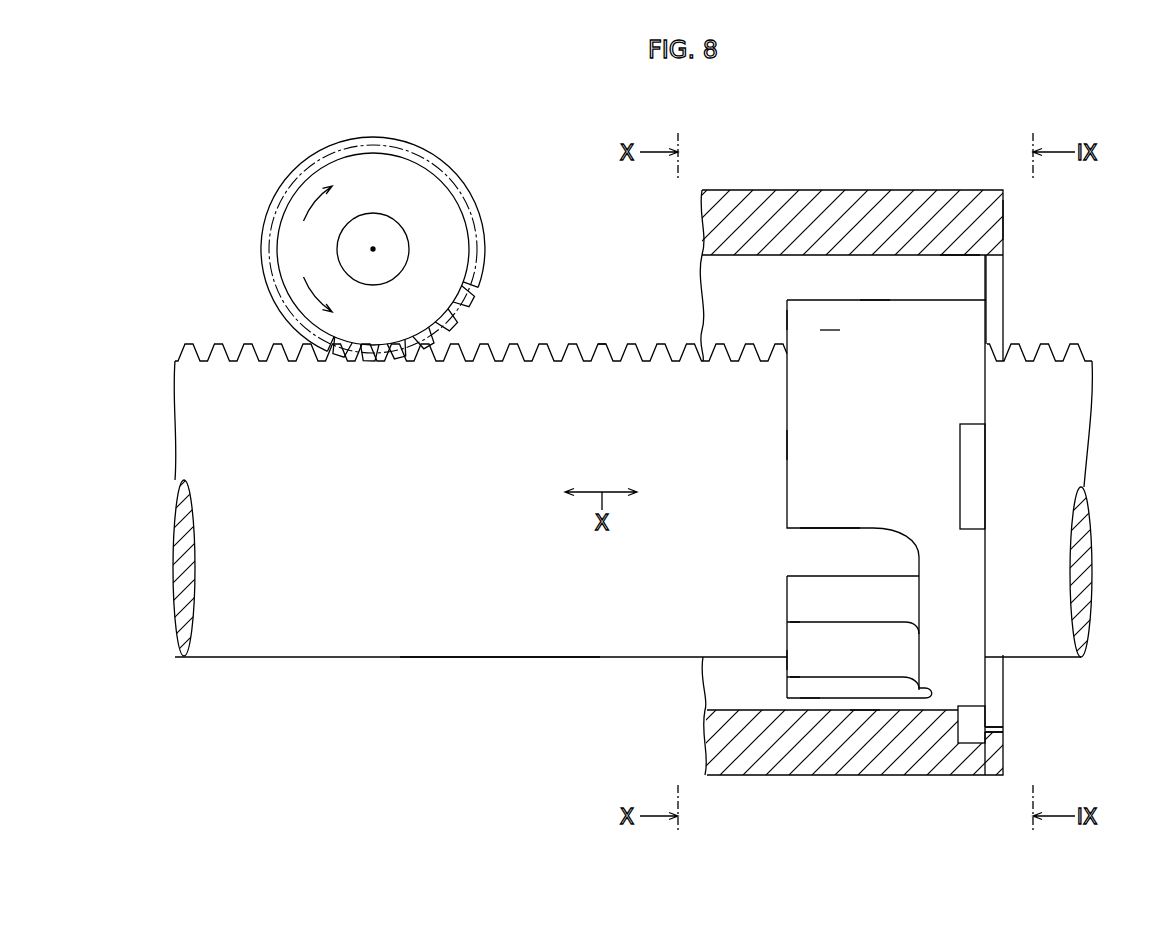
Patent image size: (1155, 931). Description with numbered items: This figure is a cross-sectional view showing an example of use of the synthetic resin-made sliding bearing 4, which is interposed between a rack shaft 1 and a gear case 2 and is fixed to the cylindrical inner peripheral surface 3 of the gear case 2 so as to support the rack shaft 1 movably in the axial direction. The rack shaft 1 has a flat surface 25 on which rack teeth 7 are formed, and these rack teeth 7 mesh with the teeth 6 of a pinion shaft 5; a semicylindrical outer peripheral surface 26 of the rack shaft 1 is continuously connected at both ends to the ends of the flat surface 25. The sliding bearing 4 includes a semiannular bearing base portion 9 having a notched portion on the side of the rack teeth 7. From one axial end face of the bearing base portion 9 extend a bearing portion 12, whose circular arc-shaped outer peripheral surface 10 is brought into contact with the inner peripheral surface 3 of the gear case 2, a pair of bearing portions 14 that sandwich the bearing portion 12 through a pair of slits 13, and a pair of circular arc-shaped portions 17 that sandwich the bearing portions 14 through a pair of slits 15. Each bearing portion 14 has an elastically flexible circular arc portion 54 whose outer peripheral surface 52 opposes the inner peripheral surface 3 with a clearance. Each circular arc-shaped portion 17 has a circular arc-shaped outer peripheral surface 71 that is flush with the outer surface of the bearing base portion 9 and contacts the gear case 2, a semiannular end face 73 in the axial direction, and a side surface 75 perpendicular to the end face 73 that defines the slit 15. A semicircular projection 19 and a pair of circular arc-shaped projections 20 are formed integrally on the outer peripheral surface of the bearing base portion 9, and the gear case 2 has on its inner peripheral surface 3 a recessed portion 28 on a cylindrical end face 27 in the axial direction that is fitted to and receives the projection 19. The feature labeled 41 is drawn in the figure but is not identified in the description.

The rack shaft 1 is at (313, 643).
The gear case 2 is at (848, 196).
The cylindrical inner peripheral surface 3 is at (930, 255).
The synthetic resin-made sliding bearing 4 is at (796, 291).
The pinion shaft 5 is at (410, 188).
The teeth 6 is at (481, 263).
The rack teeth 7 is at (221, 350).
The semiannular bearing base portion 9 is at (967, 320).
The circular arc-shaped outer peripheral surface 10 is at (862, 712).
The bearing portion 12 is at (908, 721).
The slits 13 is at (837, 685).
The bearing portions 14 is at (798, 688).
The slits 15 is at (890, 558).
The circular arc-shaped portions 17 is at (874, 289).
The semicircular projection 19 is at (967, 728).
The circular arc-shaped projections 20 is at (970, 470).
The flat surface 25 is at (622, 358).
The semicylindrical outer peripheral surface 26 is at (477, 632).
The cylindrical end face 27 is at (1008, 220).
The recessed portion 28 is at (978, 737).
The bottom surface 41 is at (811, 700).
The outer peripheral surface 52 is at (800, 662).
The elastically flexible circular arc portion 54 is at (887, 603).
The circular arc-shaped outer peripheral surface 71 is at (830, 338).
The semiannular end face 73 is at (787, 446).
The side surface 75 is at (818, 531).